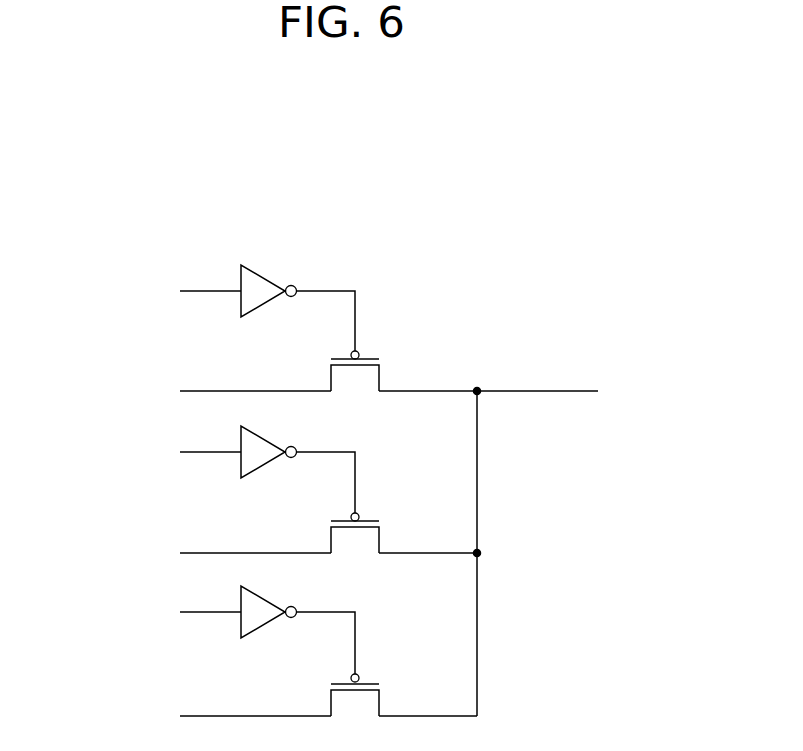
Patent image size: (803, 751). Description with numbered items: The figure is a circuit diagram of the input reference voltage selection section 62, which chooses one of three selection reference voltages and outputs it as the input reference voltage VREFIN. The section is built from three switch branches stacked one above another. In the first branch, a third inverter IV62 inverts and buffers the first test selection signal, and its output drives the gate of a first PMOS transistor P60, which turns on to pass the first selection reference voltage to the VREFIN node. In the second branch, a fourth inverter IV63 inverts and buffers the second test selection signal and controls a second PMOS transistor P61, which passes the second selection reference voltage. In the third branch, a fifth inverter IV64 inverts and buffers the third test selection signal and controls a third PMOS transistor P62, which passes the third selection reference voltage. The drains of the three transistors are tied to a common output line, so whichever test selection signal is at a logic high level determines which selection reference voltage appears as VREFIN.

The input reference voltage selection section 62 is at (497, 233).
The third inverter IV62 is at (298, 299).
The fourth inverter IV63 is at (298, 460).
The fifth inverter IV64 is at (298, 621).
The first PMOS transistor P60 is at (355, 380).
The second PMOS transistor P61 is at (355, 542).
The third PMOS transistor P62 is at (355, 705).